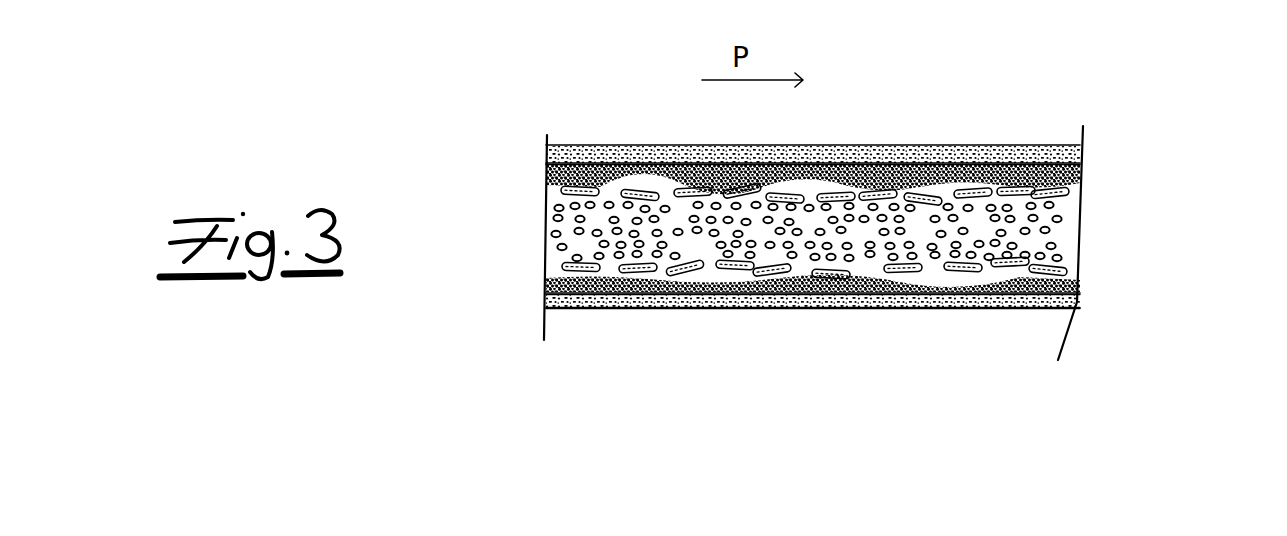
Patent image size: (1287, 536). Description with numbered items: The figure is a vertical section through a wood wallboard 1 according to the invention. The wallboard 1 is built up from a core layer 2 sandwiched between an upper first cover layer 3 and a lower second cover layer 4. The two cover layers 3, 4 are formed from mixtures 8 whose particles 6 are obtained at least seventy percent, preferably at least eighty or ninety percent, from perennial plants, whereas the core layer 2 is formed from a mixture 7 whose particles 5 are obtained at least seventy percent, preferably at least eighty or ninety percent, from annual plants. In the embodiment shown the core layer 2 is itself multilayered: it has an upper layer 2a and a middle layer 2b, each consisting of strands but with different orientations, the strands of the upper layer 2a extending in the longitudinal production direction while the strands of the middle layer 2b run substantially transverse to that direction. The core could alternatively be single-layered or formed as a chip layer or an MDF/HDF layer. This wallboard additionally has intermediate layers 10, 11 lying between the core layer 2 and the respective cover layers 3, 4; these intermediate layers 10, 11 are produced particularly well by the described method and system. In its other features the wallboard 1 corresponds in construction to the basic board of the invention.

The wood wallboard 1 is at (1120, 100).
The core layer 2 is at (844, 237).
The upper layer 2a is at (547, 183).
The middle layer 2b is at (546, 215).
The first cover layer 3 is at (537, 151).
The second cover layer 4 is at (530, 308).
The particles 5 is at (1069, 250).
The particles 6 is at (740, 303).
The mixture 7 is at (1108, 254).
The mixtures 8 is at (1094, 147).
The intermediate layer 10 is at (553, 172).
The intermediate layer 11 is at (543, 283).